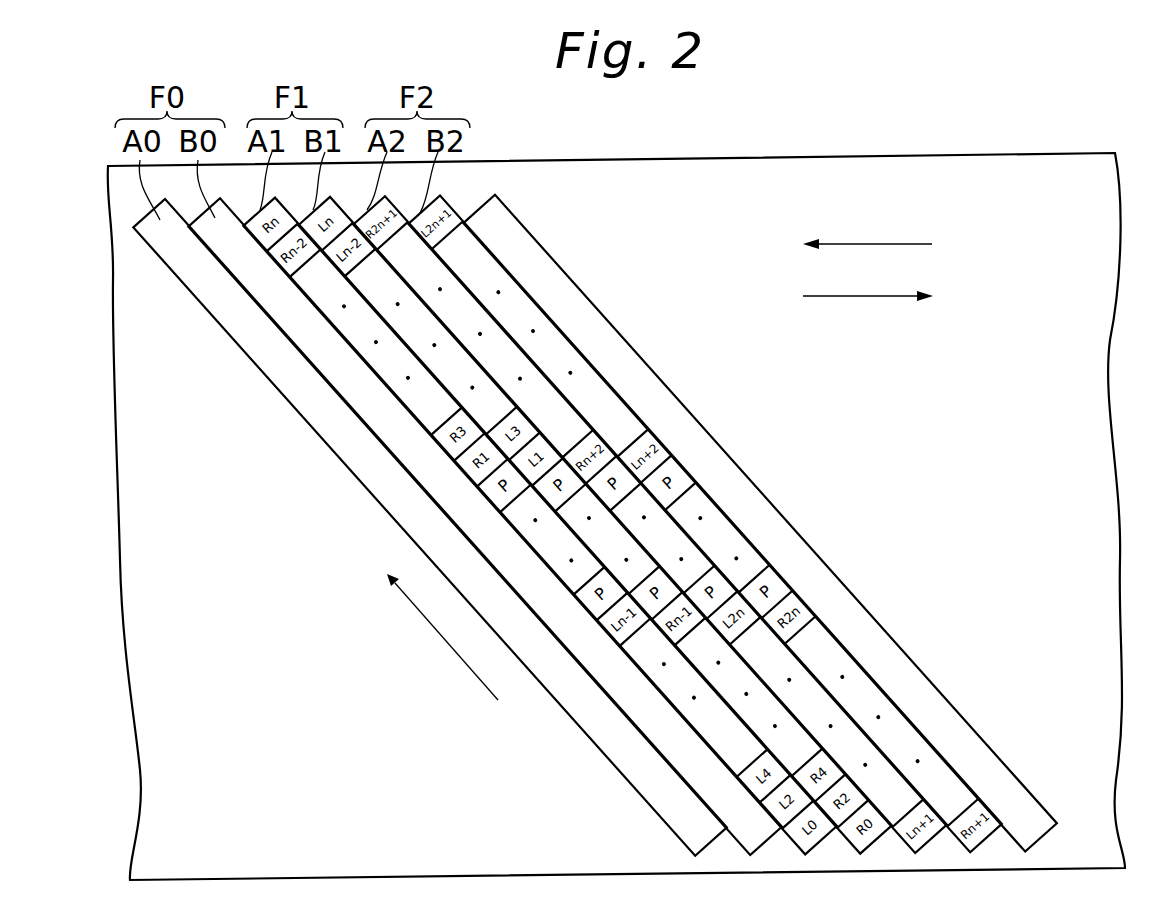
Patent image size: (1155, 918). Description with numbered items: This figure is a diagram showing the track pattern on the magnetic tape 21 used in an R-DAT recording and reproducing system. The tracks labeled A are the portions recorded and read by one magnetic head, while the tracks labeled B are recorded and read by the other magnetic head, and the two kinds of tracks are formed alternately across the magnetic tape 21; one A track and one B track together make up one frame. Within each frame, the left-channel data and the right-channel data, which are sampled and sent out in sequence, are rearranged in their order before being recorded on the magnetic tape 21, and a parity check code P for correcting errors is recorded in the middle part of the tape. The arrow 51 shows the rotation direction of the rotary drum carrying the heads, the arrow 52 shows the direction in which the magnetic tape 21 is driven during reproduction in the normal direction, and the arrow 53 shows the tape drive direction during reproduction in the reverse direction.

The magnetic tape 21 is at (946, 183).
The arrow 52 is at (862, 244).
The arrow 53 is at (862, 296).
The arrow 51 is at (423, 615).